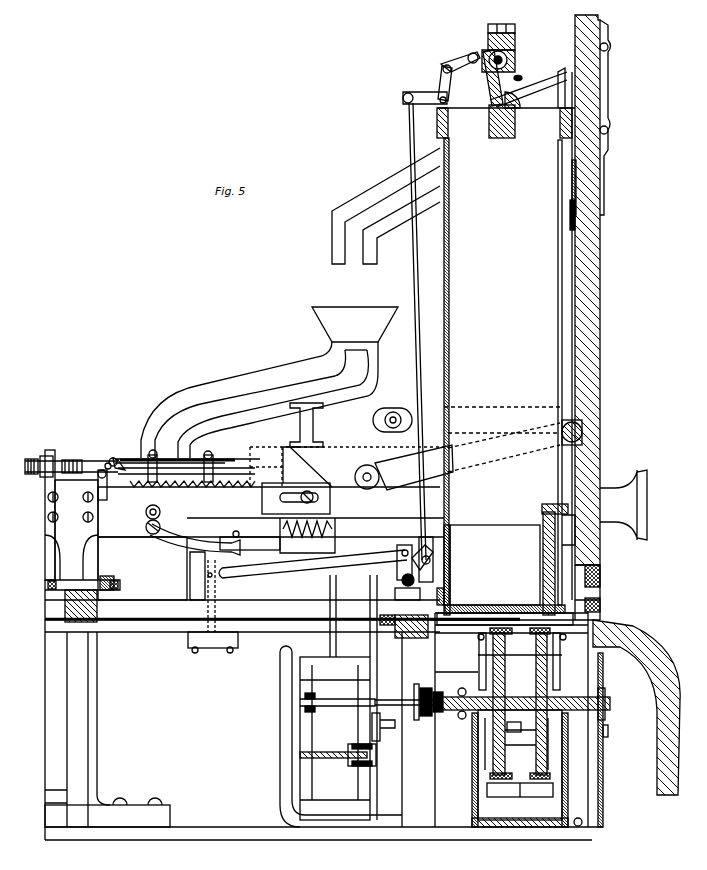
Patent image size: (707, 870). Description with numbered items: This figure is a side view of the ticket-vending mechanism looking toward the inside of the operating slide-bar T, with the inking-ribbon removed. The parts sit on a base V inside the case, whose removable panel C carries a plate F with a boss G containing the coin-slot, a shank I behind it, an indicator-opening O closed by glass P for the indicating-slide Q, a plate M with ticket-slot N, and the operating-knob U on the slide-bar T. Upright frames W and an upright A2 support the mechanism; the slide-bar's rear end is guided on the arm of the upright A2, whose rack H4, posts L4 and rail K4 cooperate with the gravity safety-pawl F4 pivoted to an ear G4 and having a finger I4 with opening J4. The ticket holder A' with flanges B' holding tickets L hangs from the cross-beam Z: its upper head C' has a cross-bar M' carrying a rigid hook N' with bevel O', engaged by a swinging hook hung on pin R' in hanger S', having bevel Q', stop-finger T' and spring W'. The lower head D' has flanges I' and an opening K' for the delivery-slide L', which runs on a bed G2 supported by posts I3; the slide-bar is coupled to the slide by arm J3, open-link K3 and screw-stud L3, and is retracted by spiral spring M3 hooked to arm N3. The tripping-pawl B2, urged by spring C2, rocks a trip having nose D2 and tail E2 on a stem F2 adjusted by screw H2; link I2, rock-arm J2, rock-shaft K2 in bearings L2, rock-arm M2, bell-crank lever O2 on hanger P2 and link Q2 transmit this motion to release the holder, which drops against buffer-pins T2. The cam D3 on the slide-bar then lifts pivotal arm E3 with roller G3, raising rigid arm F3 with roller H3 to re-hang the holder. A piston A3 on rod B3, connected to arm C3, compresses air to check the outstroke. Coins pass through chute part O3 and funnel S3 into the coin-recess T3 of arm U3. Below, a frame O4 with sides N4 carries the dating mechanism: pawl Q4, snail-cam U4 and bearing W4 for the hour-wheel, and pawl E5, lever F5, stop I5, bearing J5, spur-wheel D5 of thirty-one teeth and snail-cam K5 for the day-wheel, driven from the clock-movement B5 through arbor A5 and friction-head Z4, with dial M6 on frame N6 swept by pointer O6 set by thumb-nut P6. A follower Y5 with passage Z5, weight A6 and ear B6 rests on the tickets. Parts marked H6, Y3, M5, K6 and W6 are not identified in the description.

The removable front door or panel C is at (592, 307).
The raised center or boss G is at (614, 88).
The escutcheon or plate F is at (606, 120).
The operating-knob U is at (623, 505).
The ticket holder or tube A' is at (506, 336).
The head C' is at (450, 123).
The cross-bar M' is at (512, 121).
The buffer-pins T2 is at (572, 152).
The plate H6 is at (572, 175).
The indicator-opening O is at (591, 177).
The glass P is at (577, 192).
The indicating-slide Q is at (560, 215).
The rock-arm J2 is at (572, 268).
The metallic flanges B' is at (545, 317).
The cross-beam Z is at (500, 24).
The hanger S' is at (512, 50).
The horizontal pin R' is at (518, 55).
The spring W' is at (464, 54).
The stop-finger T' is at (509, 67).
The inwardly-projecting flange I' is at (505, 356).
The bevel Q' is at (527, 102).
The bevel O' is at (523, 78).
The rigid hook N' is at (531, 86).
The hanger P2 is at (468, 92).
The link Q2 is at (447, 68).
The bell-crank lever O2 is at (430, 95).
The rock-shaft K2 is at (420, 386).
The coin-chute part O3 is at (381, 188).
The funnel S3 is at (355, 324).
The coin-recess T3 is at (262, 378).
The piston-rod B3 is at (279, 467).
The rail K4 is at (190, 459).
The posts L4 is at (182, 466).
The finger I4 is at (115, 458).
The gravity safety-pawl F4 is at (104, 457).
The opening J4 is at (447, 722).
The arm C3 is at (58, 452).
The arm J3 is at (71, 515).
The ear G4 is at (108, 500).
The operating slide-bar T is at (271, 512).
The rack H4 is at (159, 512).
The tripping-pawl B2 is at (175, 544).
The tail E2 is at (185, 557).
The nose D2 is at (239, 538).
The screw H2 is at (201, 576).
The upright stem F2 is at (245, 584).
The arm U3 is at (142, 568).
The screw-stud L3 is at (104, 576).
The open-link K3 is at (48, 583).
The anti-friction roller H3 is at (385, 420).
The rigid lifting-arm F3 is at (396, 419).
The arm N3 is at (330, 475).
The wedge Y3 is at (320, 453).
The piston A3 is at (307, 467).
The lifting-cam D3 is at (296, 498).
The anti-friction roller G3 is at (356, 474).
The pivotal lifting-arm E3 is at (467, 448).
The spring C2 is at (213, 508).
The spiral spring M3 is at (277, 535).
The long link I2 is at (290, 566).
The rock-arm M2 is at (417, 553).
The ticket-slot N is at (508, 589).
The snail-cam K5 is at (400, 583).
The bearings L2 is at (400, 606).
The head D' is at (432, 595).
The opening K' is at (412, 621).
The delivery-slide L' is at (282, 616).
The upright A2 is at (324, 710).
The posts I3 is at (90, 718).
The bed G2 is at (166, 630).
The base V is at (290, 822).
The clock-movement B5 is at (347, 697).
The center arbor A5 is at (386, 700).
The friction-head Z4 is at (430, 722).
The upright frames W is at (492, 729).
The hollow flattened shank I is at (505, 720).
The pawl Q4 is at (482, 646).
The sides N4 is at (470, 753).
The pawl E5 is at (558, 643).
The stop I5 is at (548, 660).
The oscillating lever F5 is at (558, 668).
The thumb-nut P6 is at (606, 690).
The snail-cam U4 is at (462, 712).
The frame M5 is at (562, 718).
The spur-wheel D5 is at (548, 755).
The tubular bearing W4 is at (520, 790).
The bearing J5 is at (529, 790).
The pointer O6 is at (604, 734).
The dial M6 is at (605, 753).
The frame N6 is at (604, 798).
The frame O4 is at (520, 830).
The follower Y5 is at (492, 570).
The tickets L is at (505, 601).
The vertical passage Z5 is at (543, 563).
The weight A6 is at (548, 583).
The ear B6 is at (550, 503).
The bracket K6 is at (572, 482).
The plate M is at (527, 592).
The spout W6 is at (636, 707).